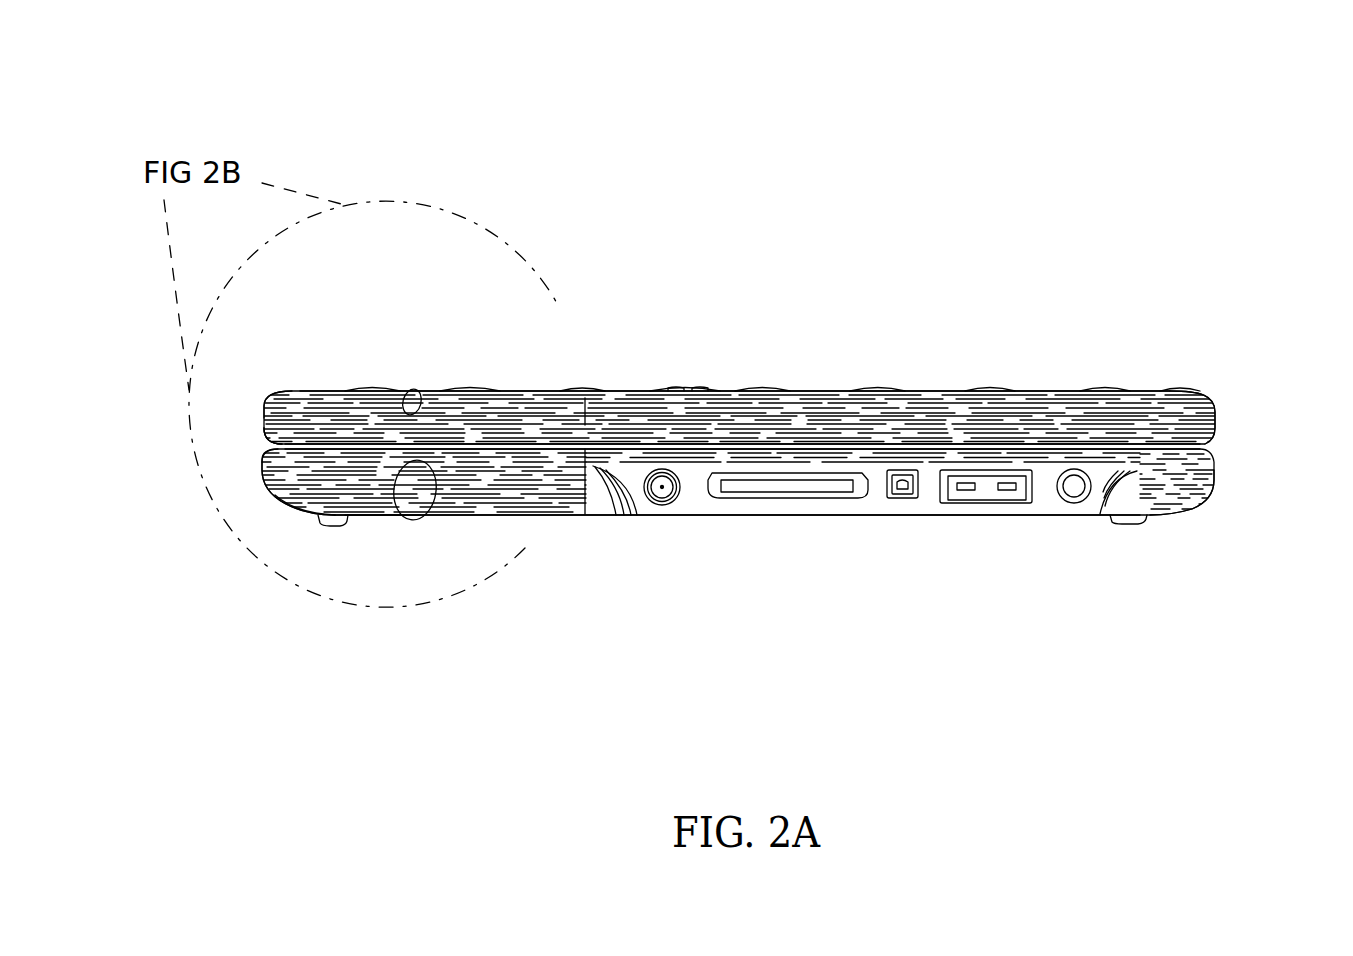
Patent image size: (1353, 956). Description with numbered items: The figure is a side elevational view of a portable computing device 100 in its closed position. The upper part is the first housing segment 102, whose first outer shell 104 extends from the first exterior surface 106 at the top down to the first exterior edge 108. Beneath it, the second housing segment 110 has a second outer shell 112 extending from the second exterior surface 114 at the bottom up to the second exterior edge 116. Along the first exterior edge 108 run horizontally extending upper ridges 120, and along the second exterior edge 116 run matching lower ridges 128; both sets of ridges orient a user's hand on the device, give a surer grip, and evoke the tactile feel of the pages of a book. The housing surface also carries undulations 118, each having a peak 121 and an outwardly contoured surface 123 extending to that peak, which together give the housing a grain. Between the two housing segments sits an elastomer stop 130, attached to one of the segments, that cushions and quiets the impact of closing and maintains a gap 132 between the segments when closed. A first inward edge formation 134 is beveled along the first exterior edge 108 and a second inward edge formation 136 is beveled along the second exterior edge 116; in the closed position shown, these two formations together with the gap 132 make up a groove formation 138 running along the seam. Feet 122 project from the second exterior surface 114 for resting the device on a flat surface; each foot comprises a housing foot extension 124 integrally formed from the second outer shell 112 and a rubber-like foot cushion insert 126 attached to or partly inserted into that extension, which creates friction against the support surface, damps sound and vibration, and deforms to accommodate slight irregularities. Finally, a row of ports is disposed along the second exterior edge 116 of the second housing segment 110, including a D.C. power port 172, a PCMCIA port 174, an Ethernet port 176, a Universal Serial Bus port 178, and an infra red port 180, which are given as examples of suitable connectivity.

The portable computing device 100 is at (406, 152).
The first housing segment 102 is at (992, 353).
The first outer shell 104 is at (833, 393).
The first exterior surface 106 is at (730, 393).
The first exterior edge 108 is at (263, 407).
The second housing segment 110 is at (937, 660).
The second outer shell 112 is at (1170, 512).
The second exterior surface 114 is at (548, 514).
The second exterior edge 116 is at (265, 490).
The undulations 118 is at (468, 393).
The upper ridges 120 is at (414, 393).
The peak 121 is at (684, 391).
The outwardly contoured surface 123 is at (697, 391).
The feet 122 is at (328, 543).
The housing foot extension 124 is at (320, 520).
The foot cushion insert 126 is at (330, 528).
The lower ridges 128 is at (412, 520).
The stop 130 is at (300, 443).
The gap 132 is at (278, 436).
The first inward edge formation 134 is at (263, 440).
The second inward edge formation 136 is at (278, 458).
The groove formation 138 is at (1227, 437).
The D.C. power port 172 is at (662, 505).
The PCMCIA port 174 is at (752, 500).
The USB-B port 176 is at (897, 500).
The Universal Serial Bus (USB) port 178 is at (980, 500).
The infra red port 180 is at (1070, 503).